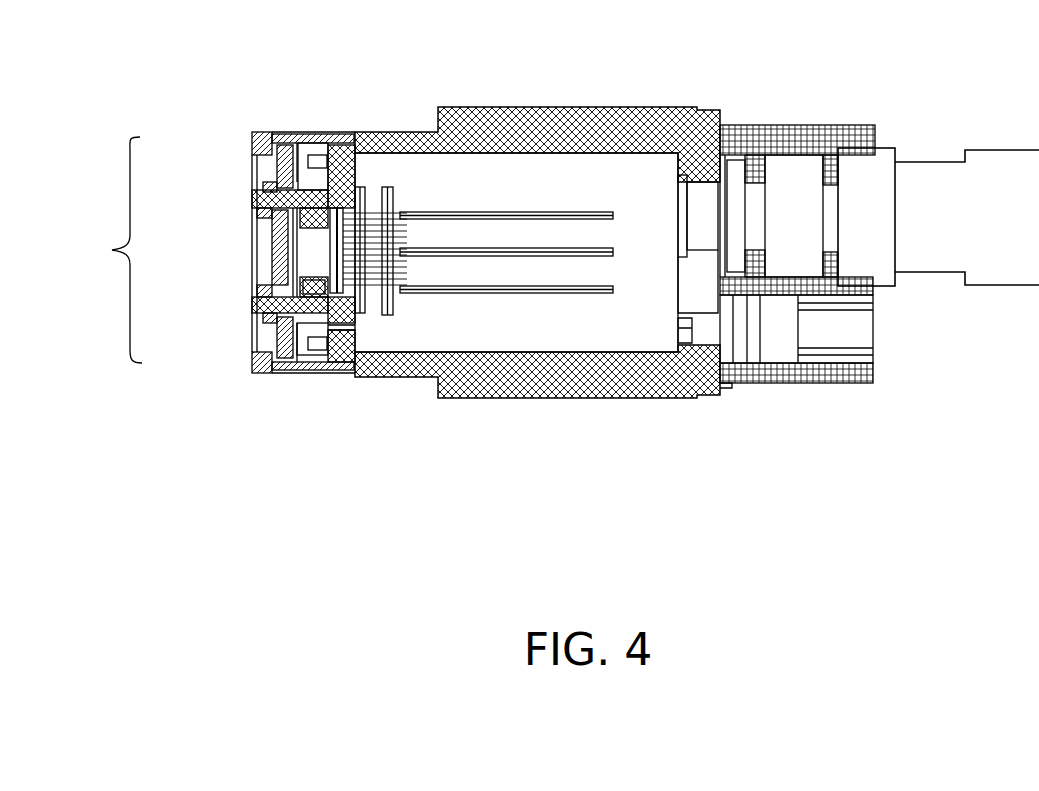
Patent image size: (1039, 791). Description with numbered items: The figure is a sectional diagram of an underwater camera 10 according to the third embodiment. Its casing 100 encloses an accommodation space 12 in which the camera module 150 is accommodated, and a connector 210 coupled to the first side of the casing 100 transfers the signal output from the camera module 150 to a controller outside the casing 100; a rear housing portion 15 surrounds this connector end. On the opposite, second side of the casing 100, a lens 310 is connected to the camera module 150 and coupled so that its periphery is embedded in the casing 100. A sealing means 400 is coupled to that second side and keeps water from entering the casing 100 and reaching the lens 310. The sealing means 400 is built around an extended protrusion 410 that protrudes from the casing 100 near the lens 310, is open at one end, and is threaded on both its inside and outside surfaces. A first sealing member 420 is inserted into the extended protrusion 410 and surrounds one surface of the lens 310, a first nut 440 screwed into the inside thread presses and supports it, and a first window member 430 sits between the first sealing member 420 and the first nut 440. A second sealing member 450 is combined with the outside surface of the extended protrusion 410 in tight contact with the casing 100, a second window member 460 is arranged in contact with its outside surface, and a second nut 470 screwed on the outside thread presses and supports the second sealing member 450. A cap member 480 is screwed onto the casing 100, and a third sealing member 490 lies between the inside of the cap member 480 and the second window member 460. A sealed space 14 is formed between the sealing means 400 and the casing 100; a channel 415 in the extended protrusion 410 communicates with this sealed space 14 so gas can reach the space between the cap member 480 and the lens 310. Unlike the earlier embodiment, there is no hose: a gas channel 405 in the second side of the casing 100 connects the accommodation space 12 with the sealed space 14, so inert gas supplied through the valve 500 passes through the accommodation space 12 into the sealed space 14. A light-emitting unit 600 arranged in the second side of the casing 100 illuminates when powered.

The connector assembly 10 is at (537, 248).
The accommodation space 12 is at (487, 312).
The sealed space 14 is at (300, 157).
The rear housing 15 is at (800, 127).
The casing 100 is at (615, 372).
The camera module 150 is at (573, 293).
The connector 210 is at (931, 160).
The lens 310 is at (320, 260).
The sealing means 400 is at (222, 247).
The gas channel 405 is at (350, 373).
The extended protrusion 410 is at (252, 198).
The channel 415 is at (300, 374).
The first sealing member 420 is at (257, 213).
The first window member 430 is at (272, 258).
The first nut 440 is at (257, 291).
The second sealing member 450 is at (263, 186).
The second window member 460 is at (277, 337).
The second nut 470 is at (263, 318).
The cap member 480 is at (251, 137).
The third sealing member 490 is at (252, 362).
The valve 500 is at (833, 330).
The light-emitting unit 600 is at (317, 155).